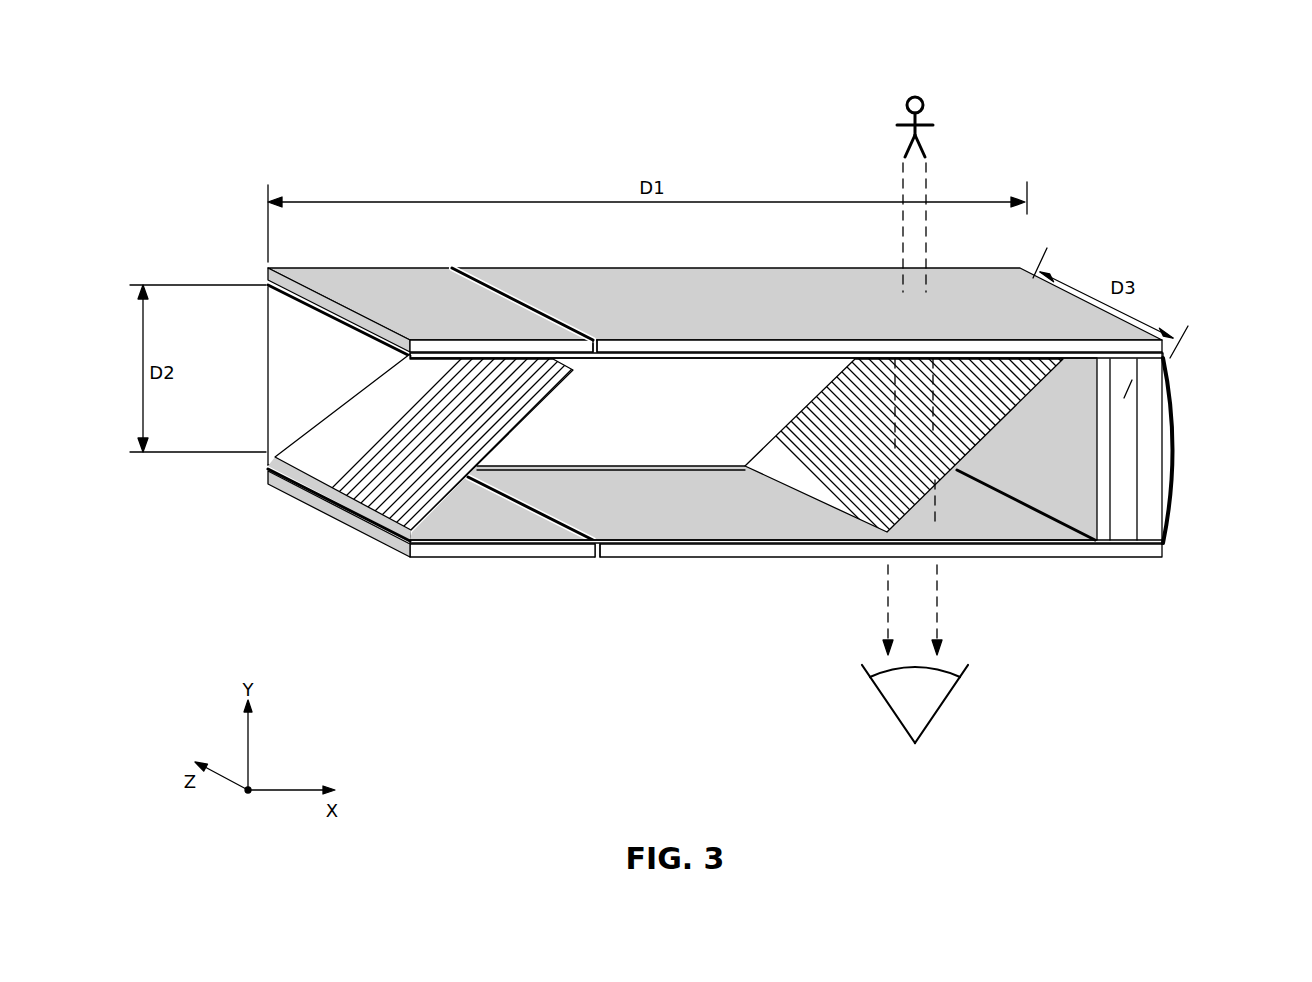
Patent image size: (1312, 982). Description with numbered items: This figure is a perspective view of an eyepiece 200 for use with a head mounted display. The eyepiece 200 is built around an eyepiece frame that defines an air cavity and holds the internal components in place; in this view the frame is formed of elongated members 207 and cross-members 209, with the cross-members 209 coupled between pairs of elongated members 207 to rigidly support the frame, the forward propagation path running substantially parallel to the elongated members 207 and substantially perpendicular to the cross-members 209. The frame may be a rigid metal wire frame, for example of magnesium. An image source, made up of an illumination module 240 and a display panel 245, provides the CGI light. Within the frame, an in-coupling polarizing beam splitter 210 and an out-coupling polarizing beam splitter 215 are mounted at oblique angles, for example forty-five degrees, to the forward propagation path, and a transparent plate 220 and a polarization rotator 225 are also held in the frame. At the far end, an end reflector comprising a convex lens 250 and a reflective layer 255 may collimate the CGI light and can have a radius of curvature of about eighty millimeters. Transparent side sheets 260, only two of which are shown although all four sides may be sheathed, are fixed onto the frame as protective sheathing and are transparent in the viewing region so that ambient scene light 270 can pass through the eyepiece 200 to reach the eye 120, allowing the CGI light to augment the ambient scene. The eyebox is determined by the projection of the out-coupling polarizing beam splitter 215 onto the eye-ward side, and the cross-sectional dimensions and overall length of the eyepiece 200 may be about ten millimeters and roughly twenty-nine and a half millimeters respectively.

The eye 120 is at (901, 704).
The eyepiece 200 is at (238, 118).
The elongated members 207 is at (625, 360).
The cross-members 209 is at (290, 298).
The in-coupling polarizing beam splitter 210 is at (359, 443).
The out-coupling polarizing beam splitter 215 is at (811, 456).
The transparent plate 220 is at (1103, 532).
The polarization rotator 225 is at (1120, 544).
The illumination module 240 is at (401, 313).
The display panel 245 is at (438, 557).
The convex lens 250 is at (1163, 546).
The reflective layer 255 is at (1175, 412).
The transparent side sheets 260 is at (751, 315).
The ambient scene light 270 is at (927, 189).